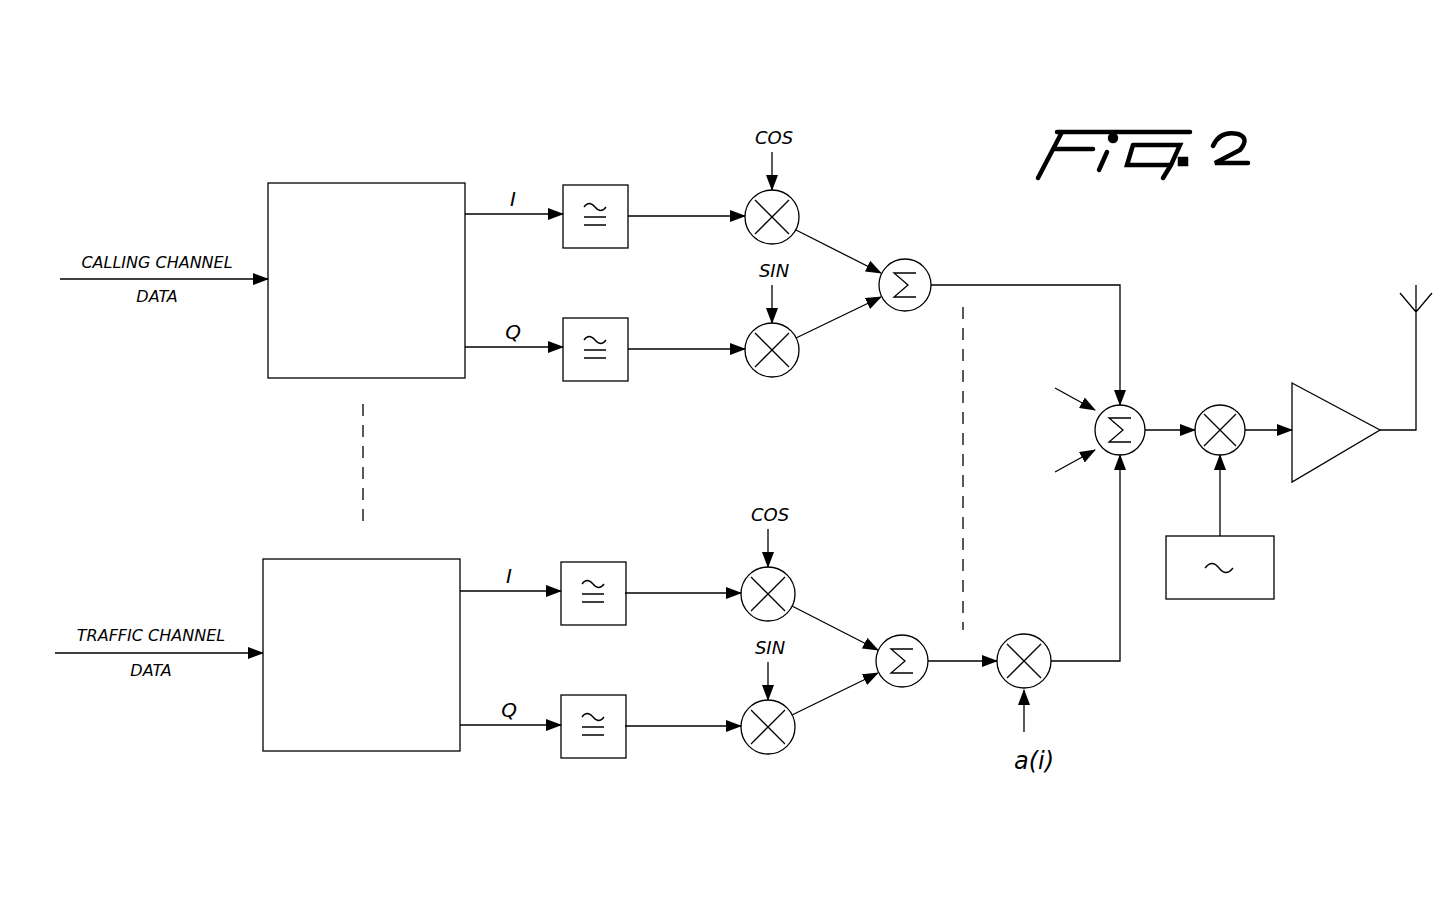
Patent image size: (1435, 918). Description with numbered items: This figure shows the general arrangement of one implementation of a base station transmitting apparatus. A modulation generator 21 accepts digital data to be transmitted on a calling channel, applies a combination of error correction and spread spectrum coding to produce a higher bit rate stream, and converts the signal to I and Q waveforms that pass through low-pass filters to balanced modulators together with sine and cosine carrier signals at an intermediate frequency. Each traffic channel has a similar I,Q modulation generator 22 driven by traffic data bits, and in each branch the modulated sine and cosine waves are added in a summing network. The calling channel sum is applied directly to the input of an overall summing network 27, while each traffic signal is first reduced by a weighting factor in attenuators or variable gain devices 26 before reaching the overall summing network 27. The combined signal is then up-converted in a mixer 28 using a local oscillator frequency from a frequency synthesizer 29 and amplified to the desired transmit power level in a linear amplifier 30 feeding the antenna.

The modulation generator 21 is at (363, 183).
The I,Q modulation generator 22 is at (355, 751).
The attenuators or variable gain devices 26 is at (1028, 634).
The overall summing network 27 is at (1140, 416).
The mixer 28 is at (1237, 412).
The frequency synthesizer 29 is at (1216, 599).
The linear amplifier 30 is at (1328, 462).